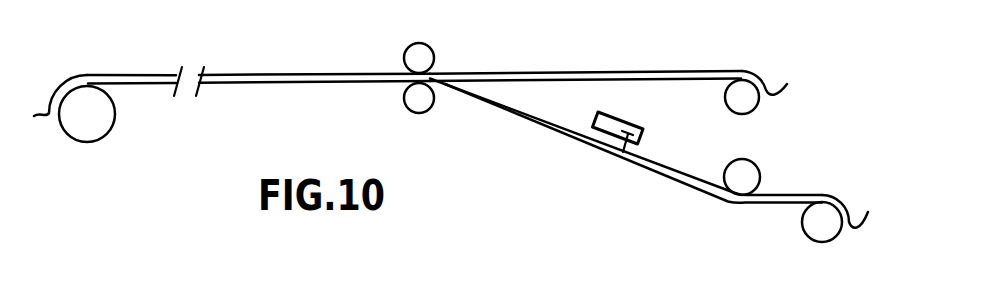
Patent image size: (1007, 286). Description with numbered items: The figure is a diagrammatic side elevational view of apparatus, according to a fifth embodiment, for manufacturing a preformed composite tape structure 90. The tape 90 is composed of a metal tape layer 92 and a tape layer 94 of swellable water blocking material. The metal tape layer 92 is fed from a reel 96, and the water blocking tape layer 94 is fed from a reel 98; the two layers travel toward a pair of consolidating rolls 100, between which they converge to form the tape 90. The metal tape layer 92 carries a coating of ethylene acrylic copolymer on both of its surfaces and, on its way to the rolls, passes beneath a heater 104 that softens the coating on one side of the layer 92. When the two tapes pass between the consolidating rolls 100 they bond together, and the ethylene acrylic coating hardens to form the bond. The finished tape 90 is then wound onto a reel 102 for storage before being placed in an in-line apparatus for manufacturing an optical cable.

The preformed composite tape structure 90 is at (156, 75).
The metal tape layer 92 is at (531, 122).
The tape layer of swellable water blocking material 94 is at (577, 73).
The reel 96 is at (809, 221).
The reel 98 is at (739, 96).
The consolidating rolls 100 is at (404, 60).
The reel 102 is at (98, 119).
The heater 104 is at (623, 158).